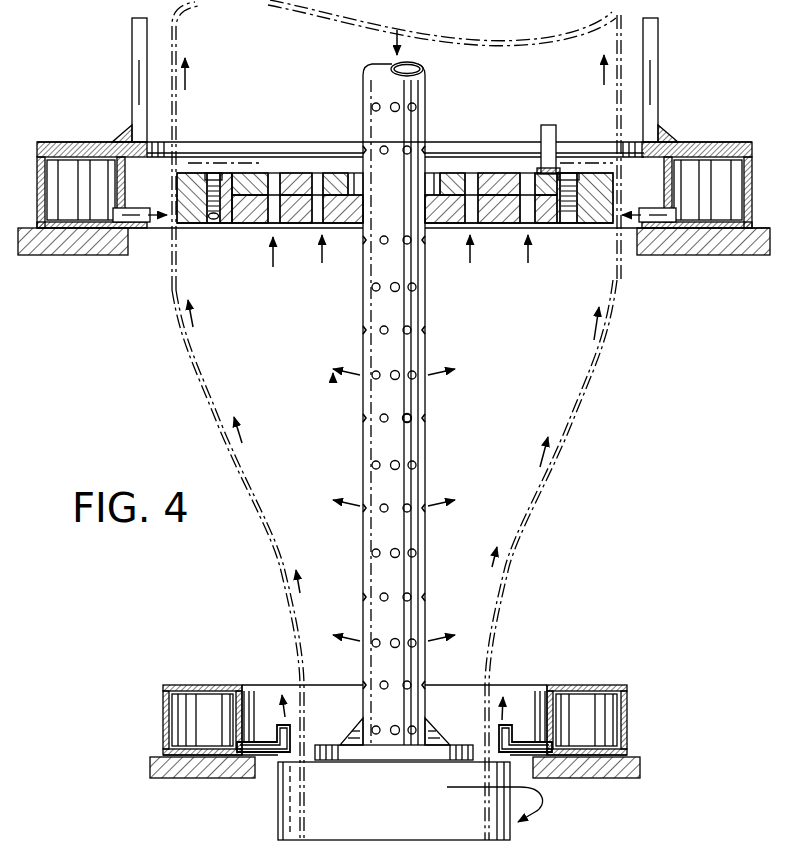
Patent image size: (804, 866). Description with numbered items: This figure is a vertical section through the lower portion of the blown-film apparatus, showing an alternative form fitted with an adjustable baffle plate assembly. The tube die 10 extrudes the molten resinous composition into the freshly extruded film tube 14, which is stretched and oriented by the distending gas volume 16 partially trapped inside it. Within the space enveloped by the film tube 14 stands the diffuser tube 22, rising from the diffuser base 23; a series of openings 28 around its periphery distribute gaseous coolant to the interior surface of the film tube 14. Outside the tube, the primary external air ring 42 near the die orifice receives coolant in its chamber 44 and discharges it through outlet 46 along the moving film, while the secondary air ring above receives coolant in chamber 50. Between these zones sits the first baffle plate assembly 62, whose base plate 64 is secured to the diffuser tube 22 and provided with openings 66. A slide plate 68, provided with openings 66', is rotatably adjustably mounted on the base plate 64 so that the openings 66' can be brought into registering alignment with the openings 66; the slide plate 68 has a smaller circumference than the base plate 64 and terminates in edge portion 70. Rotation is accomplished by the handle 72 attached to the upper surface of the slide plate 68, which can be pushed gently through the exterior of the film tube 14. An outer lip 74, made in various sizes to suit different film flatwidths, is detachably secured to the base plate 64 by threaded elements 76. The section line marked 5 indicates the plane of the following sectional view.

The tube die 10 is at (402, 813).
The film tube 14 is at (577, 422).
The distending gas volume 16 is at (527, 366).
The diffuser tube 22 is at (373, 443).
The diffuser base 23 is at (348, 750).
The openings 28 is at (411, 418).
The primary external air ring 42 is at (201, 690).
The chamber 44 is at (180, 722).
The outlet 46 is at (263, 743).
The chamber 50 is at (71, 175).
The section line 5- 5 is at (210, 165).
The first baffle plate assembly 62 is at (582, 232).
The base plate 64 is at (297, 215).
The openings 66 is at (394, 227).
The openings 66' is at (251, 161).
The slide plate 68 is at (293, 182).
The edge portion 70 is at (553, 216).
The handle 72 is at (545, 125).
The outer lip 74 is at (187, 203).
The threaded elements 76 is at (213, 218).